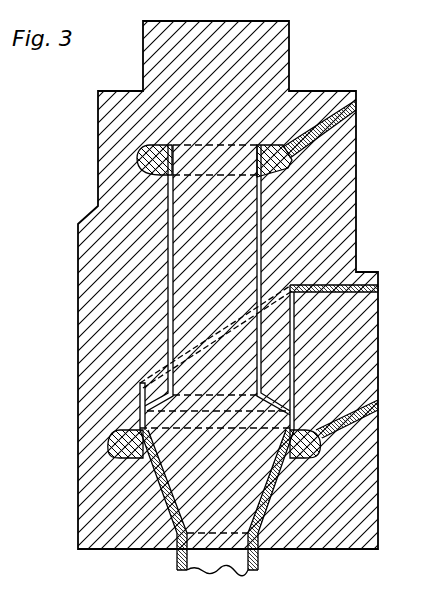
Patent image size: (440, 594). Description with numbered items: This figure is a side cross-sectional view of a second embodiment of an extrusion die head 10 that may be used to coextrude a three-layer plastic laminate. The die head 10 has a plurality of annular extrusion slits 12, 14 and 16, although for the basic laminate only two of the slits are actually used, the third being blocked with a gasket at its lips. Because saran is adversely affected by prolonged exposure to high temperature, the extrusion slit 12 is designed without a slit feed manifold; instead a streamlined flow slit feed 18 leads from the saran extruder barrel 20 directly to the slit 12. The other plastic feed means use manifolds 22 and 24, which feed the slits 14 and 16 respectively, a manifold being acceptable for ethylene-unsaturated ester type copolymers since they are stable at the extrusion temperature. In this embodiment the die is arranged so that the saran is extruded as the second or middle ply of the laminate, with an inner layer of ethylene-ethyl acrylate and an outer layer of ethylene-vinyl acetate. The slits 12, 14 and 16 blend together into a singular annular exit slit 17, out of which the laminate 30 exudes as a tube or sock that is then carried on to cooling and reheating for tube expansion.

The extrusion die head 10 is at (85, 292).
The extrusion slit 12 is at (294, 346).
The extrusion slit 14 is at (286, 455).
The extrusion slit 16 is at (258, 218).
The annular exit slit 17 is at (263, 528).
The streamlined flow slit feed 18 is at (208, 338).
The saran extruder barrel 20 is at (372, 293).
The manifold 22 is at (320, 445).
The manifold 24 is at (283, 170).
The laminate 30 is at (178, 563).